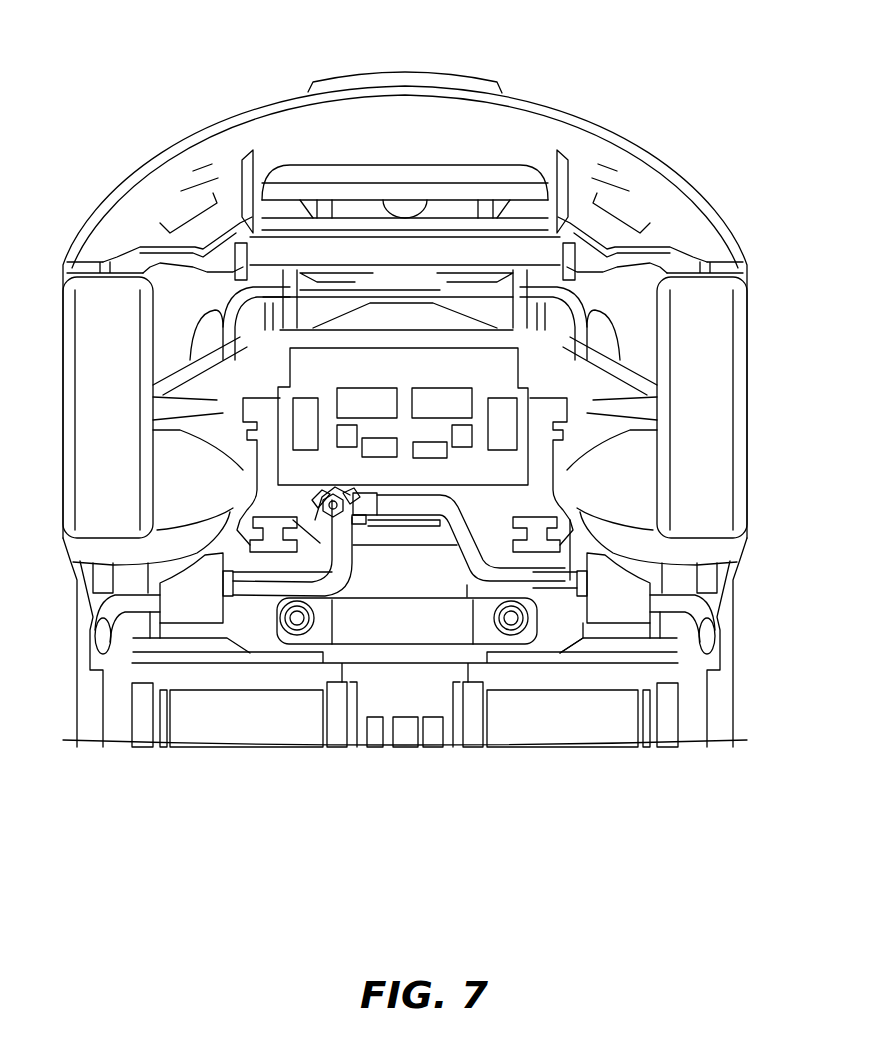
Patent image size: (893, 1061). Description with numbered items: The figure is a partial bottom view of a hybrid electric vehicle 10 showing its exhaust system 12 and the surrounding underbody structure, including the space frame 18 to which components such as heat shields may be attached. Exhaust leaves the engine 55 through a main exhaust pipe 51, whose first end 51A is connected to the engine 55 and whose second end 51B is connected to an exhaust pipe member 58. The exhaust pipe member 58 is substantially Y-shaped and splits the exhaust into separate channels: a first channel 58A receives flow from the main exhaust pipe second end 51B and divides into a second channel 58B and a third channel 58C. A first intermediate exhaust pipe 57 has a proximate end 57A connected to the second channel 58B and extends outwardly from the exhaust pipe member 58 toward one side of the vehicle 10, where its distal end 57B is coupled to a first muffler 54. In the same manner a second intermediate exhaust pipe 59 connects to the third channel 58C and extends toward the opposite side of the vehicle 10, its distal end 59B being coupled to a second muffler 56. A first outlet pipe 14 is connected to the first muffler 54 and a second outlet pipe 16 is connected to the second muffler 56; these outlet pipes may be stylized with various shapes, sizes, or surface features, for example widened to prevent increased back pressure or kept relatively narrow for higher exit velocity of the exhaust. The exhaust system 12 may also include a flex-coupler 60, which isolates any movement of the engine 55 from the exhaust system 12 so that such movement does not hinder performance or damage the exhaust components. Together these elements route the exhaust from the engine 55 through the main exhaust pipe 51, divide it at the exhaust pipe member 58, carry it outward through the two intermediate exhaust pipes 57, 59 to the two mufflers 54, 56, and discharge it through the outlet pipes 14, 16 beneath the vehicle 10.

The vehicle 10 is at (195, 86).
The exhaust system 12 is at (499, 518).
The first outlet pipe 14 is at (690, 625).
The second outlet pipe 16 is at (122, 628).
The space frame 18 is at (300, 682).
The main exhaust pipe 51 is at (300, 508).
The main exhaust pipe first end 51A is at (322, 503).
The main exhaust pipe second end 51B is at (313, 502).
The first muffler 54 is at (620, 605).
The engine 55 is at (509, 365).
The second muffler 56 is at (195, 605).
The first intermediate exhaust pipe 57 is at (448, 498).
The first intermediate exhaust pipe proximate end 57A is at (383, 512).
The first intermediate exhaust pipe distal end 57B is at (578, 633).
The exhaust pipe member 58 is at (353, 520).
The first channel 58A is at (333, 494).
The second channel 58B is at (363, 500).
The third channel 58C is at (342, 523).
The second intermediate exhaust pipe 59 is at (300, 637).
The second intermediate exhaust pipe distal end 59B is at (247, 583).
The flex-coupler 60 is at (313, 590).